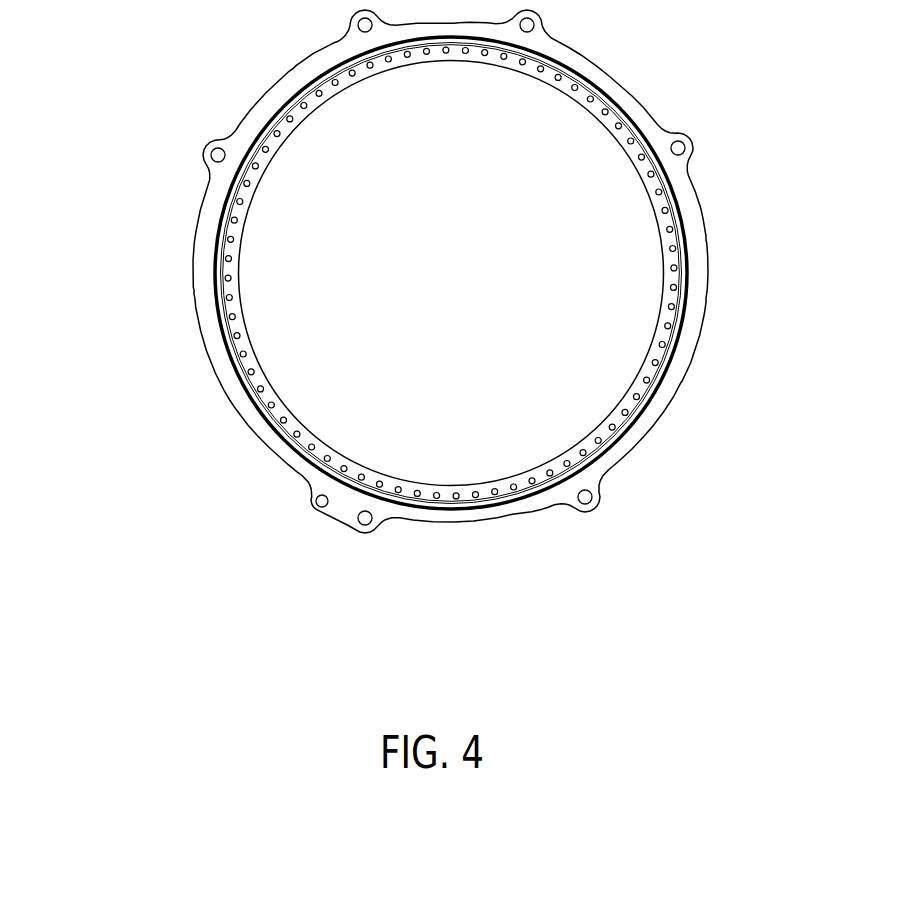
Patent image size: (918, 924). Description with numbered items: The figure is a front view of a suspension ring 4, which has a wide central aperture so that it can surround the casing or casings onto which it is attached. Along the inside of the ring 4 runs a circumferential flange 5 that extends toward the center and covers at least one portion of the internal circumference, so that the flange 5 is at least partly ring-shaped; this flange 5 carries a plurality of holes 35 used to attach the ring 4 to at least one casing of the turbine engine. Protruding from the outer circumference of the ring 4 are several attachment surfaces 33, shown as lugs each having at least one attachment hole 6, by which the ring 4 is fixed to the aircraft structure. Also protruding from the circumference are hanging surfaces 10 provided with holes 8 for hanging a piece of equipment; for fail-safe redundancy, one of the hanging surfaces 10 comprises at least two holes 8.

The suspension ring 4 is at (110, 224).
The attachment surfaces 33 is at (165, 135).
The attachment hole 6 is at (710, 135).
The hanging surfaces 10 is at (638, 504).
The holes 8 is at (296, 508).
The holes 35 is at (440, 82).
The circumferential flange 5 is at (560, 122).